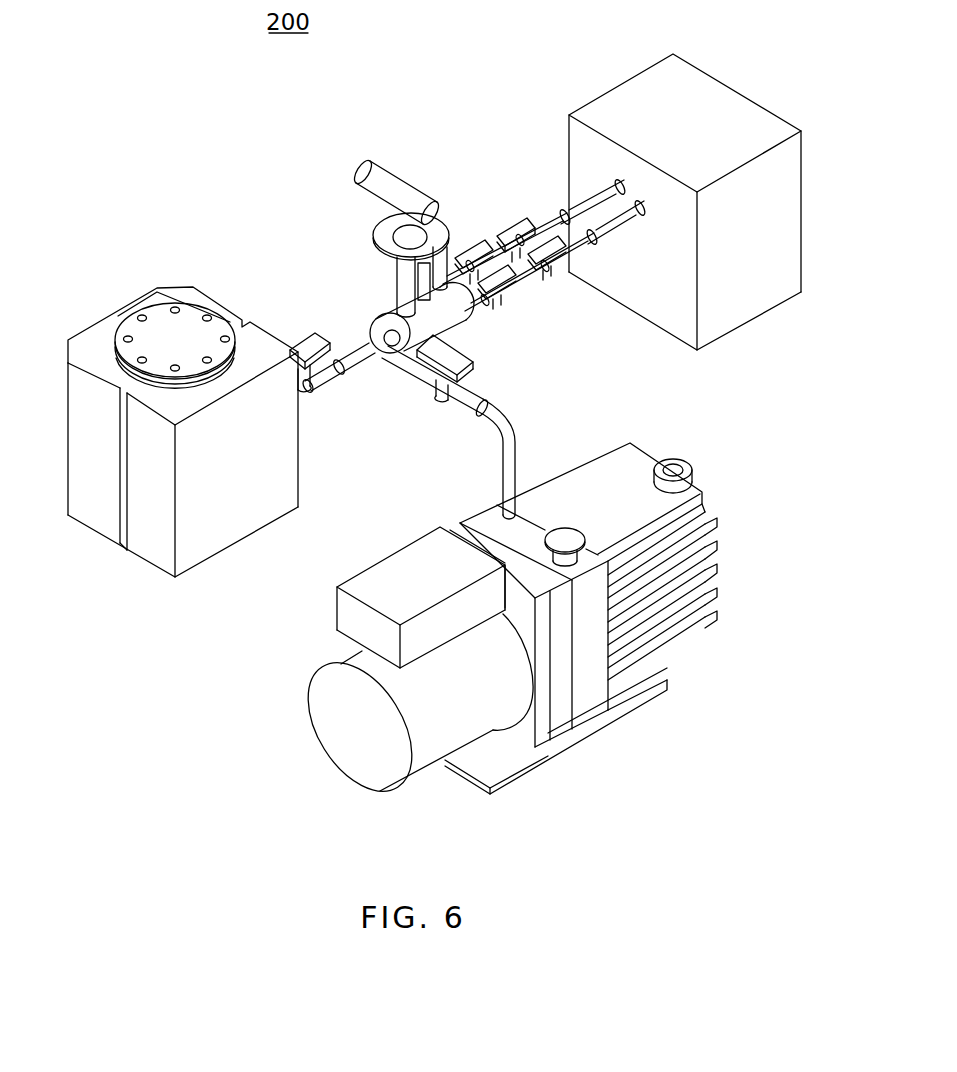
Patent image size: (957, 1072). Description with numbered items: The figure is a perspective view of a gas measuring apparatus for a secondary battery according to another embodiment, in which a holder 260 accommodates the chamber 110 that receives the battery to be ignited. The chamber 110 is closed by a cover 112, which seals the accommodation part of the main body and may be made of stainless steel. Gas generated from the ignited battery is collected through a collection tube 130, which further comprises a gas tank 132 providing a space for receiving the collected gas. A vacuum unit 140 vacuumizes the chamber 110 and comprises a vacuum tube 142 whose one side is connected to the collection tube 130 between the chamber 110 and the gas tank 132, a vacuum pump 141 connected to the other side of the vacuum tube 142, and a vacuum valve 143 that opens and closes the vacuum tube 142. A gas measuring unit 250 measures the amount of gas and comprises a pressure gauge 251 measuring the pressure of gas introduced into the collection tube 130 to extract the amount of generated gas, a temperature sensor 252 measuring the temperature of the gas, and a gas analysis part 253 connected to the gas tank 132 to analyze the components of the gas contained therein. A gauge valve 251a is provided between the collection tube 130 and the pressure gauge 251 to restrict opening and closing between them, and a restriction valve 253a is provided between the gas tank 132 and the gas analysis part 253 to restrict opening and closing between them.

The chamber 110 is at (150, 296).
The cover 112 is at (190, 328).
The collection tube 130 is at (358, 342).
The gas tank 132 is at (456, 321).
The vacuum unit 140 is at (803, 368).
The vacuum pump 141 is at (722, 574).
The vacuum tube 142 is at (518, 432).
The vacuum valve 143 is at (470, 350).
The gas measuring unit 250 is at (410, 85).
The pressure gauge 251 is at (403, 190).
The gauge valve 251a is at (375, 276).
The temperature sensor 252 is at (448, 230).
The gas analysis part 253 is at (576, 158).
The restriction valve 253a is at (515, 222).
The holder 260 is at (166, 592).